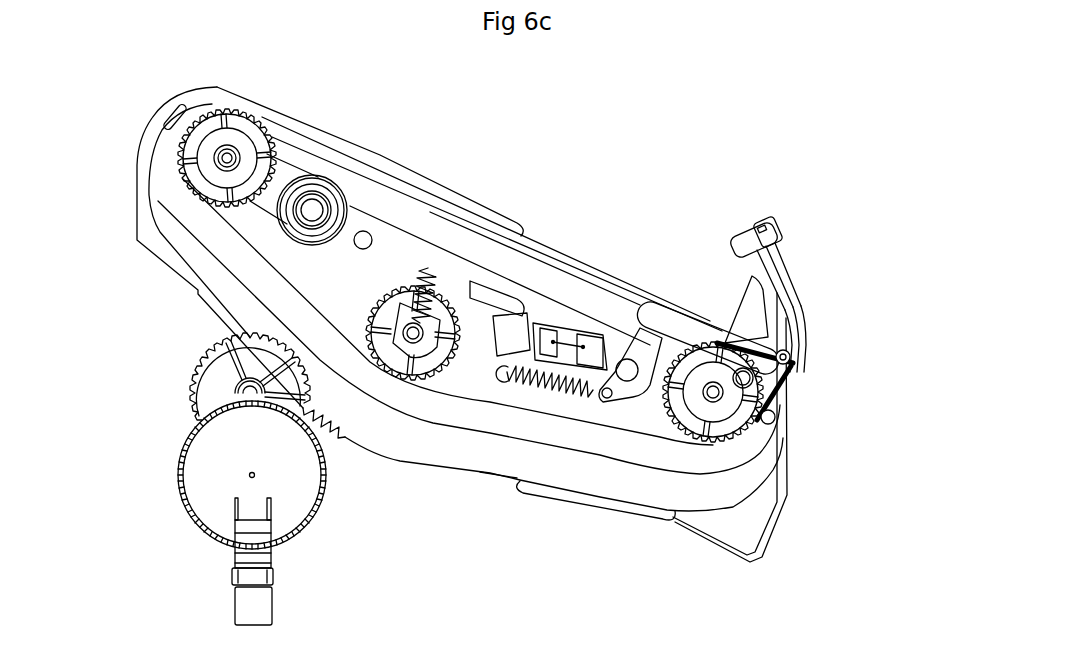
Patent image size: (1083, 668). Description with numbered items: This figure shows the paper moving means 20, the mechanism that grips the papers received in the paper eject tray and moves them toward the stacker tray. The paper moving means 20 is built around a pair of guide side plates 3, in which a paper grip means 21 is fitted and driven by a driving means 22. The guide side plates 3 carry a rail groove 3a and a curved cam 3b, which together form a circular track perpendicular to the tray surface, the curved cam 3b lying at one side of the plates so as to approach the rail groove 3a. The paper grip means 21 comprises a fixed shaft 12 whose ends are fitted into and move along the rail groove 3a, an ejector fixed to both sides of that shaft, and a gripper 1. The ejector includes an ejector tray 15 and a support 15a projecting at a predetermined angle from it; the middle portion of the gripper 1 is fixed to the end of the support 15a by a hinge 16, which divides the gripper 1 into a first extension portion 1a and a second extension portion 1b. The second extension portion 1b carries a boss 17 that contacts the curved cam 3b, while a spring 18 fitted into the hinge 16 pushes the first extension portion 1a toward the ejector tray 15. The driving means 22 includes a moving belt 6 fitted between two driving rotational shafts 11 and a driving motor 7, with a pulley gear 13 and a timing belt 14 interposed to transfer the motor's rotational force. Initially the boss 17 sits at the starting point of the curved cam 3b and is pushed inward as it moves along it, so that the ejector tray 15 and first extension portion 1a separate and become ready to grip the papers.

The gripper 1 is at (800, 328).
The first extension portion 1a is at (783, 290).
The second extension portion 1b is at (777, 397).
The guide side plates 3 is at (408, 170).
The rail groove 3a is at (517, 262).
The curved cam 3b is at (780, 488).
The moving belt 6 is at (515, 410).
The driving motor 7 is at (295, 510).
The driving rotational shafts 11 is at (225, 152).
The fixed shaft 12 is at (760, 347).
The pulley gear 13 is at (208, 402).
The timing belt 14 is at (277, 167).
The ejector tray 15 is at (670, 310).
The support 15a is at (790, 350).
The hinge 16 is at (792, 362).
The boss 17 is at (766, 424).
The spring 18 is at (783, 387).
The paper moving means 20 is at (611, 545).
The paper grip means 21 is at (837, 317).
The driving means 22 is at (197, 490).